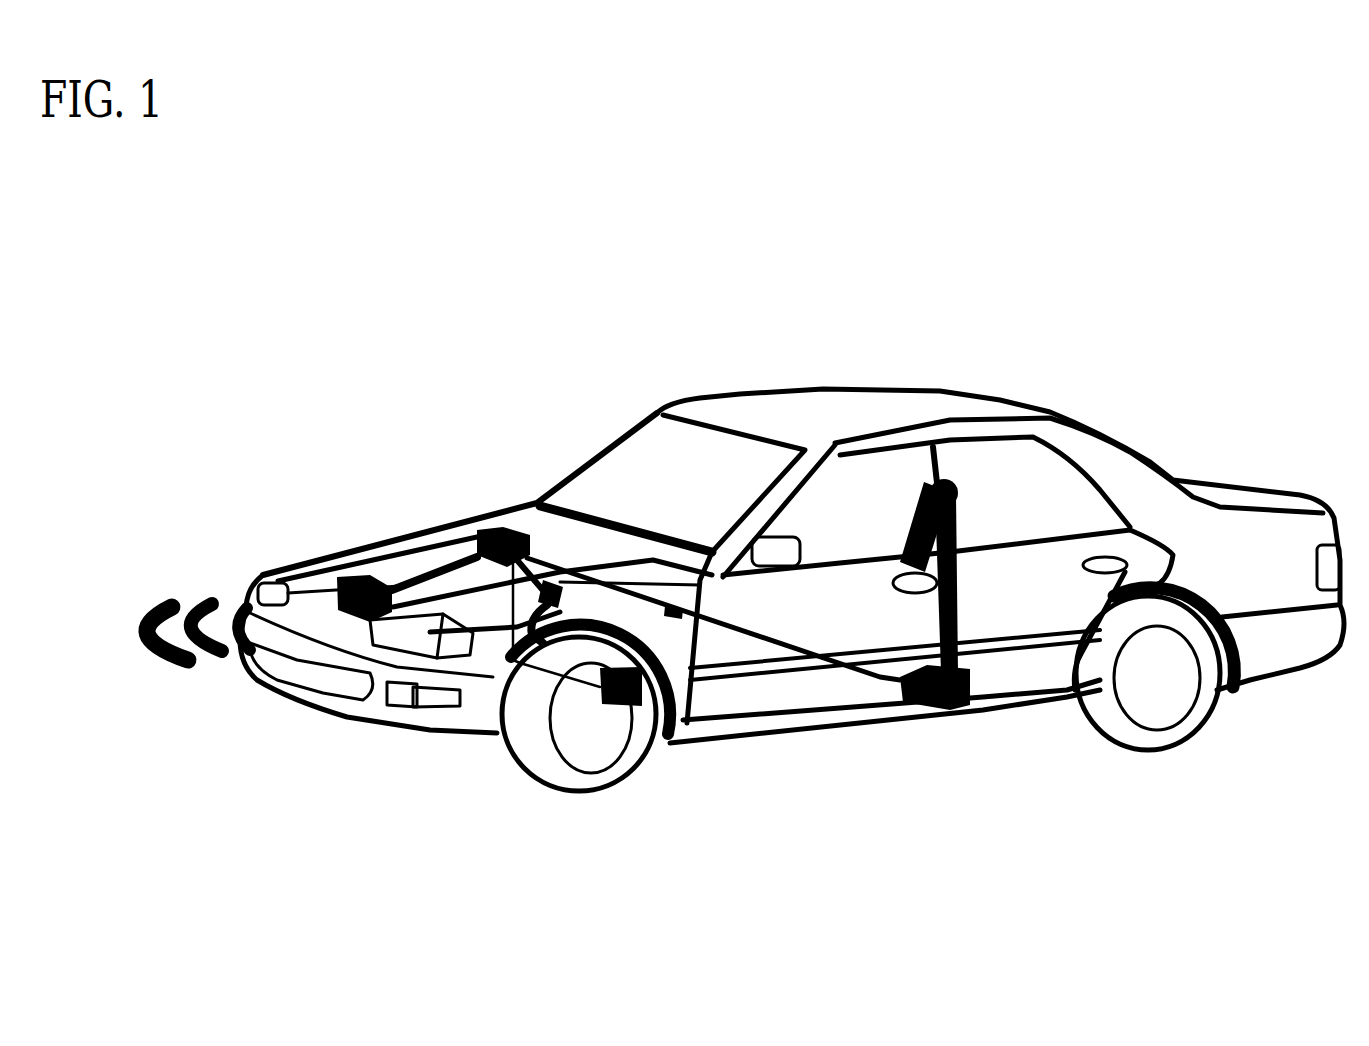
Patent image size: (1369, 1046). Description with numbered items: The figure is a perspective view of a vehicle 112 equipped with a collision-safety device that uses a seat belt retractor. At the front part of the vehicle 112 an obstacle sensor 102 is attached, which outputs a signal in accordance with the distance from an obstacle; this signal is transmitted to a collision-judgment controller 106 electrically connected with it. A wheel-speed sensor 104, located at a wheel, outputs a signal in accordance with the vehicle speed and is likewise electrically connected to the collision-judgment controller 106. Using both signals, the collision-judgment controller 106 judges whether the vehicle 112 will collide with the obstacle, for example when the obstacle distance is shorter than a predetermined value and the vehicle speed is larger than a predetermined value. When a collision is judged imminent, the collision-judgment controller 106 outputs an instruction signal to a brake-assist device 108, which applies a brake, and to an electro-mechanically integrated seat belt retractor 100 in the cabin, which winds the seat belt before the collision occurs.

The electro-mechanically integrated seat belt retractor 100 is at (963, 707).
The obstacle sensor 102 is at (330, 587).
The wheel-speed sensor 104 is at (595, 696).
The collision-judgment controller 106 is at (477, 520).
The brake-assist device 108 is at (557, 580).
The vehicle 112 is at (1127, 440).